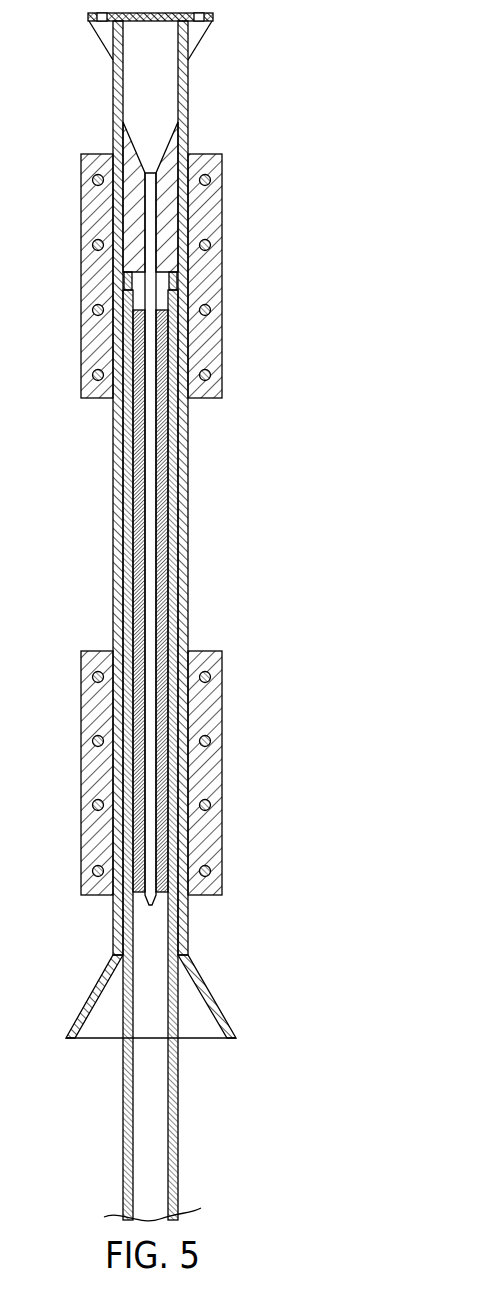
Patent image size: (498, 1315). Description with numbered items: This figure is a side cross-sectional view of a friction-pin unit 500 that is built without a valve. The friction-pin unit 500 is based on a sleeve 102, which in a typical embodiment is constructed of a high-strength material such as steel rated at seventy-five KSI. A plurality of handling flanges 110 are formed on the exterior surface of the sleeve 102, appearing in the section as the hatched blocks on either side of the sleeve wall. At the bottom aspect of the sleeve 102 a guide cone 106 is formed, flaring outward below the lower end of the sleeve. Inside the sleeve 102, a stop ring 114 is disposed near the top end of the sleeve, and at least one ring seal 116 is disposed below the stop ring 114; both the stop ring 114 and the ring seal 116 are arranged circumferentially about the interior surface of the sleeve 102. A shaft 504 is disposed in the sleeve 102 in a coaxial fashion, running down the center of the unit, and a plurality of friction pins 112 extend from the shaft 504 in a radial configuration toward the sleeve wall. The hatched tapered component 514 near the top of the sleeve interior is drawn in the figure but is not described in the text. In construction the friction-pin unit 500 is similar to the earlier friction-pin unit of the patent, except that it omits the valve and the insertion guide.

The friction-pin unit 500 is at (213, 614).
The sleeve 102 is at (185, 615).
The handling flanges 110 is at (210, 342).
The tapered insert 514 is at (128, 283).
The stop ring 114 is at (175, 280).
The ring seal 116 is at (180, 345).
The friction pins 112 is at (142, 455).
The shaft 504 is at (155, 213).
The guide cone 106 is at (222, 1017).